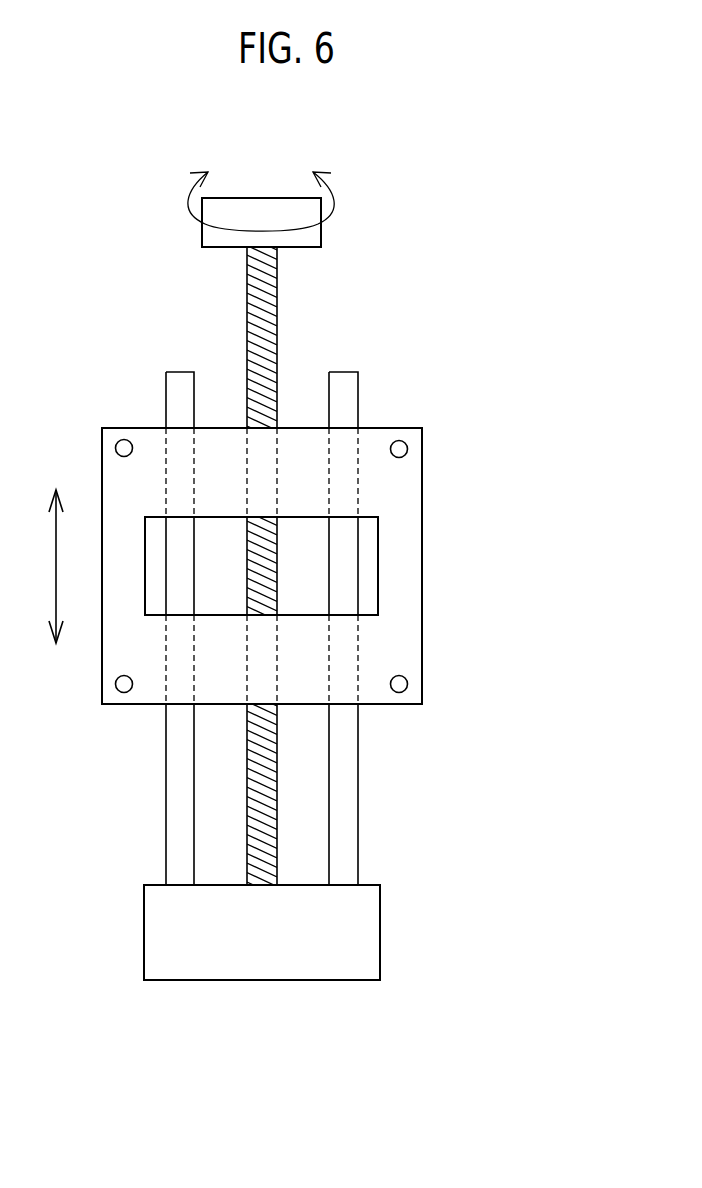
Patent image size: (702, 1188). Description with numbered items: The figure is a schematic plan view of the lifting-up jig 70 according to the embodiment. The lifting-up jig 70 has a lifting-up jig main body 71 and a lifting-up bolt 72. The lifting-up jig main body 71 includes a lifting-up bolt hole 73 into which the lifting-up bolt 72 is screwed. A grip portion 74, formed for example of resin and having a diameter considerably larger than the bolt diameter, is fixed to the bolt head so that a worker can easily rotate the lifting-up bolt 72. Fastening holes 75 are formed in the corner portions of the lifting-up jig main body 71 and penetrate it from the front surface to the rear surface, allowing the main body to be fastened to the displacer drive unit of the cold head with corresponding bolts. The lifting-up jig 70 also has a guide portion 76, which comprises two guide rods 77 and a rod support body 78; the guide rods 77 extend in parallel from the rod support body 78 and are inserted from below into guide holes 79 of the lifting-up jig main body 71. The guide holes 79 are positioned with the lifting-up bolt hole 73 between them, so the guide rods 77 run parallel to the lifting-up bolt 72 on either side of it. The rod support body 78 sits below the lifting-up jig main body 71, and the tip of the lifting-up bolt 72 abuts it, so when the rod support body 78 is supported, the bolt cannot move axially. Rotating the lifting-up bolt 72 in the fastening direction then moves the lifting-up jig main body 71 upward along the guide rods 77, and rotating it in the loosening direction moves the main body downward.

The lifting-up jig 70 is at (278, 1156).
The lifting-up jig main body 71 is at (408, 552).
The lifting-up bolt 72 is at (277, 315).
The lifting-up bolt hole 73 is at (277, 472).
The grip portion 74 is at (260, 198).
The fastening holes 75 is at (410, 453).
The guide portion 76 is at (356, 676).
The guide rods 77 is at (359, 802).
The rod support body 78 is at (363, 930).
The guide holes 79 is at (357, 657).